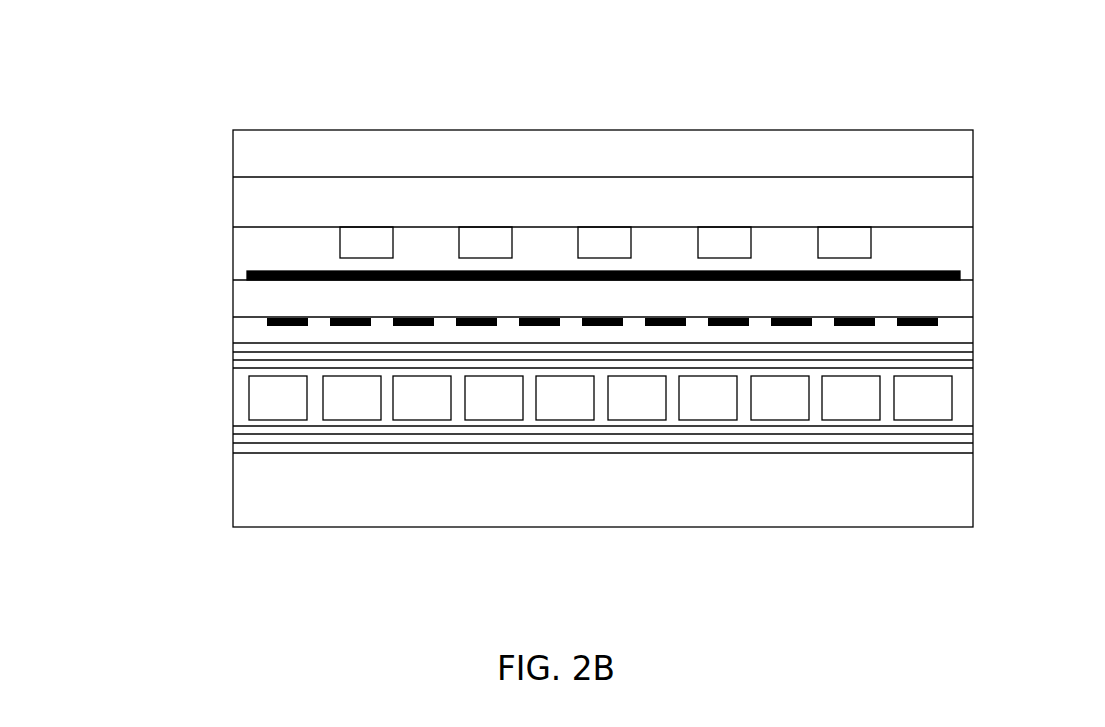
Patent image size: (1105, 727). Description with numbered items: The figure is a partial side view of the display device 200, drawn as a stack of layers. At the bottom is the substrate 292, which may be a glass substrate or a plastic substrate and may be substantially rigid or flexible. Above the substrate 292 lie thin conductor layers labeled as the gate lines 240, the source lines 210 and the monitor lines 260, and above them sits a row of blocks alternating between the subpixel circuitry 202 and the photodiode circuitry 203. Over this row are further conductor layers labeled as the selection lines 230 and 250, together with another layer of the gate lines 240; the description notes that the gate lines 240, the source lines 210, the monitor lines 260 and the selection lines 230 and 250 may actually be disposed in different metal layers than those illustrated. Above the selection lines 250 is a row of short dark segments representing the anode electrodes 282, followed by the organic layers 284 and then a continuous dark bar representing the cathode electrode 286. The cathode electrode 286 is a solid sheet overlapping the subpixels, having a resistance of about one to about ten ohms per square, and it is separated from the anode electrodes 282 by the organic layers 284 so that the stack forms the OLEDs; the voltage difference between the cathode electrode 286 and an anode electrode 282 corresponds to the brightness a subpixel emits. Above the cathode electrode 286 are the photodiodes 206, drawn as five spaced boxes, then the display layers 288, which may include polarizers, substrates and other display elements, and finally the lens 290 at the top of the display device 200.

The display device 200 is at (128, 62).
The subpixel circuitry 202 is at (260, 408).
The photodiode circuitry 203 is at (334, 408).
The photodiodes 206 is at (384, 253).
The source lines 210 is at (238, 446).
The selection lines 230 is at (968, 350).
The gate lines 240 is at (968, 363).
The selection lines 250 is at (233, 360).
The monitor lines 260 is at (233, 428).
The anode electrodes 282 is at (255, 327).
The organic layers 284 is at (239, 296).
The cathode electrode 286 is at (245, 275).
The display layers 288 is at (239, 203).
The lens 290 is at (239, 159).
The substrate 292 is at (240, 502).